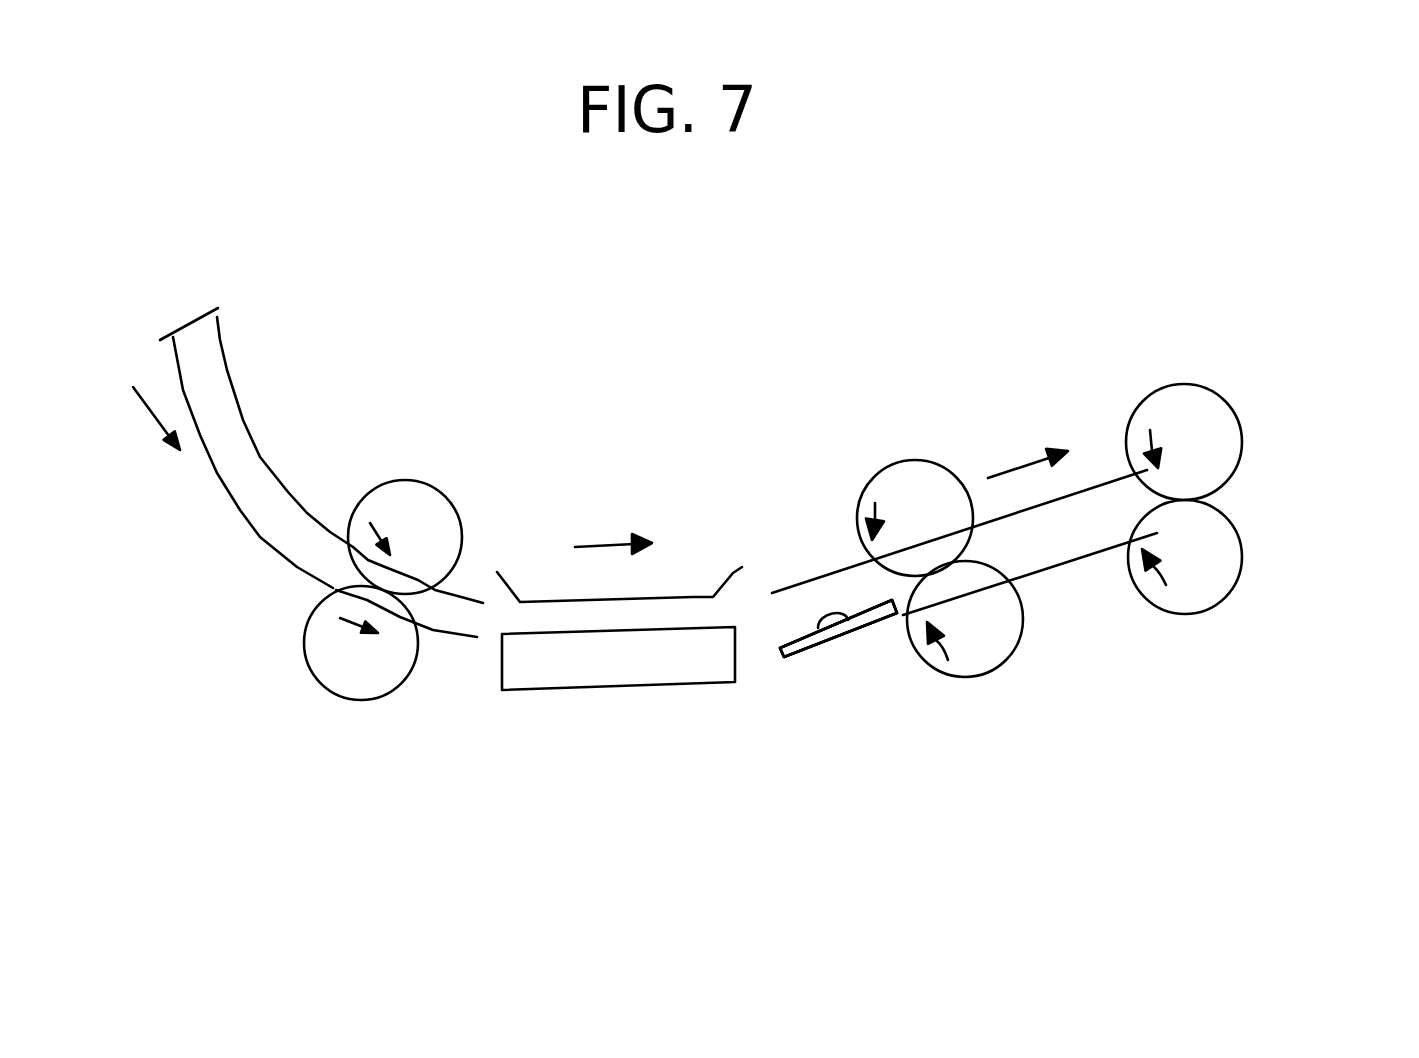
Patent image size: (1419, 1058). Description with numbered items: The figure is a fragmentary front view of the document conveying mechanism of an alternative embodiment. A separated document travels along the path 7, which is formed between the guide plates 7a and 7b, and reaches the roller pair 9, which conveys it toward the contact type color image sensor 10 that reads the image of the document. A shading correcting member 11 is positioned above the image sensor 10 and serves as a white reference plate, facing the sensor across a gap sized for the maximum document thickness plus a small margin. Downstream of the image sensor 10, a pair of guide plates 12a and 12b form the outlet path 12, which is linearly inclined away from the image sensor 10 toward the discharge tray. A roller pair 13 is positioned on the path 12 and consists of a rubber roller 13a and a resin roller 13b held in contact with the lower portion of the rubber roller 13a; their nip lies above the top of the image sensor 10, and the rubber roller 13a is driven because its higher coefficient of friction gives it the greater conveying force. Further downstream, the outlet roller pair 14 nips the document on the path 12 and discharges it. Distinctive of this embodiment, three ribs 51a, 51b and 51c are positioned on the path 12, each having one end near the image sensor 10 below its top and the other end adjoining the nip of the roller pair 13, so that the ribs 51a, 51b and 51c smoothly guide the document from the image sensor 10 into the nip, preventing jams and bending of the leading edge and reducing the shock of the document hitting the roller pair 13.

The path 7 is at (301, 430).
The guide plate 7a is at (226, 462).
The guide plate 7b is at (333, 373).
The roller pair 9 is at (386, 619).
The color image sensor 10 is at (618, 719).
The shading correcting member 11 is at (628, 538).
The outlet path 12 is at (1138, 548).
The guide plate 12a is at (1150, 395).
The guide plate 12b is at (1172, 653).
The roller pair 13 is at (886, 551).
The rubber roller 13a is at (861, 472).
The resin roller 13b is at (965, 679).
The outlet roller pair 14 is at (1305, 484).
The rib 51a is at (844, 737).
The rib 51b is at (838, 628).
The rib 51c is at (838, 628).